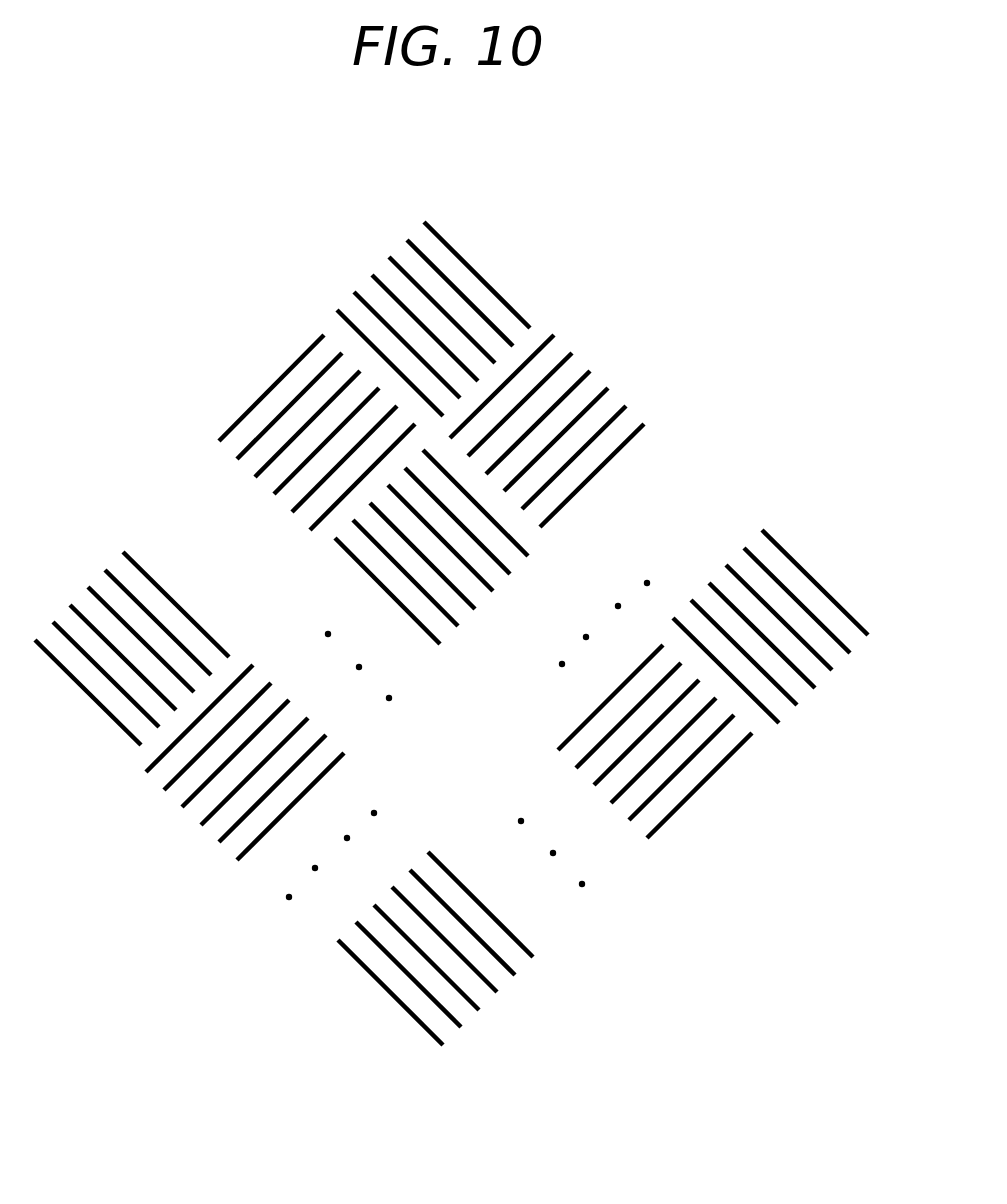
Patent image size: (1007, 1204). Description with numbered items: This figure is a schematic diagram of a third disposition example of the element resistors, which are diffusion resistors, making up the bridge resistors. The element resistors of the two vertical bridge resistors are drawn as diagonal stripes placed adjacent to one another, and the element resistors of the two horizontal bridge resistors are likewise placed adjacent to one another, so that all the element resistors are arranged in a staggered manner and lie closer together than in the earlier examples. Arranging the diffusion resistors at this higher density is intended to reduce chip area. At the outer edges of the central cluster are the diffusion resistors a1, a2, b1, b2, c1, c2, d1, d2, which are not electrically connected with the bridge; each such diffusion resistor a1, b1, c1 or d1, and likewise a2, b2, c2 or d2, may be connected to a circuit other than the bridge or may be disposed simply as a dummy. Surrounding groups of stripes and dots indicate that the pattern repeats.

The diffusion resistor a1 is at (219, 441).
The diffusion resistor a2 is at (310, 530).
The diffusion resistor b1 is at (424, 222).
The diffusion resistor b2 is at (337, 310).
The diffusion resistor c1 is at (554, 335).
The diffusion resistor c2 is at (644, 424).
The diffusion resistor d1 is at (528, 556).
The diffusion resistor d2 is at (440, 644).